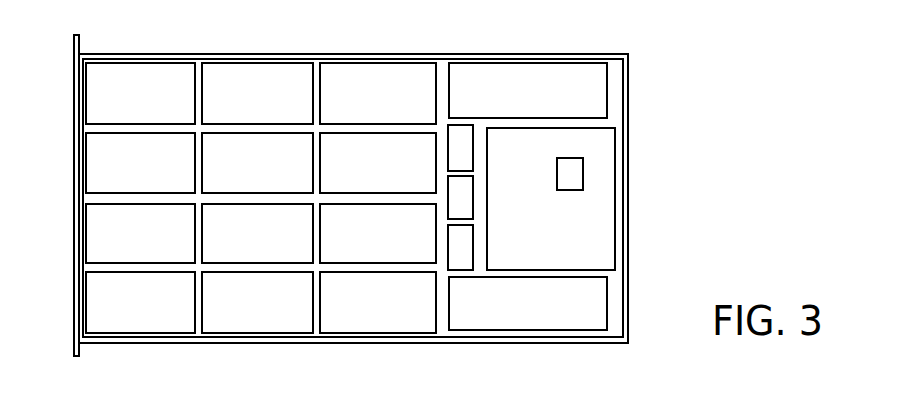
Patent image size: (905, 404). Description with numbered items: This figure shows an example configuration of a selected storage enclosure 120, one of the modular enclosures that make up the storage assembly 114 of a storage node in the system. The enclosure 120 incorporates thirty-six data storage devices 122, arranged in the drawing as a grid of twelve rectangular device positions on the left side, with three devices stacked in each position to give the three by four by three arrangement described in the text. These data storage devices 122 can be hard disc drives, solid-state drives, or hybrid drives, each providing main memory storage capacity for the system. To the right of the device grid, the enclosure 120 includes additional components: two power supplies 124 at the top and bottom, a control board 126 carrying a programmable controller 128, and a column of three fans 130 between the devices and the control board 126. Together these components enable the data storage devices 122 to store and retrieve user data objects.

The storage assembly 114 is at (348, 55).
The storage enclosure 120 is at (456, 184).
The data storage device 122 is at (258, 77).
The power supply 124 is at (546, 75).
The control board 126 is at (585, 226).
The programmable controller (CPU) 128 is at (583, 174).
The fan 130 is at (458, 138).